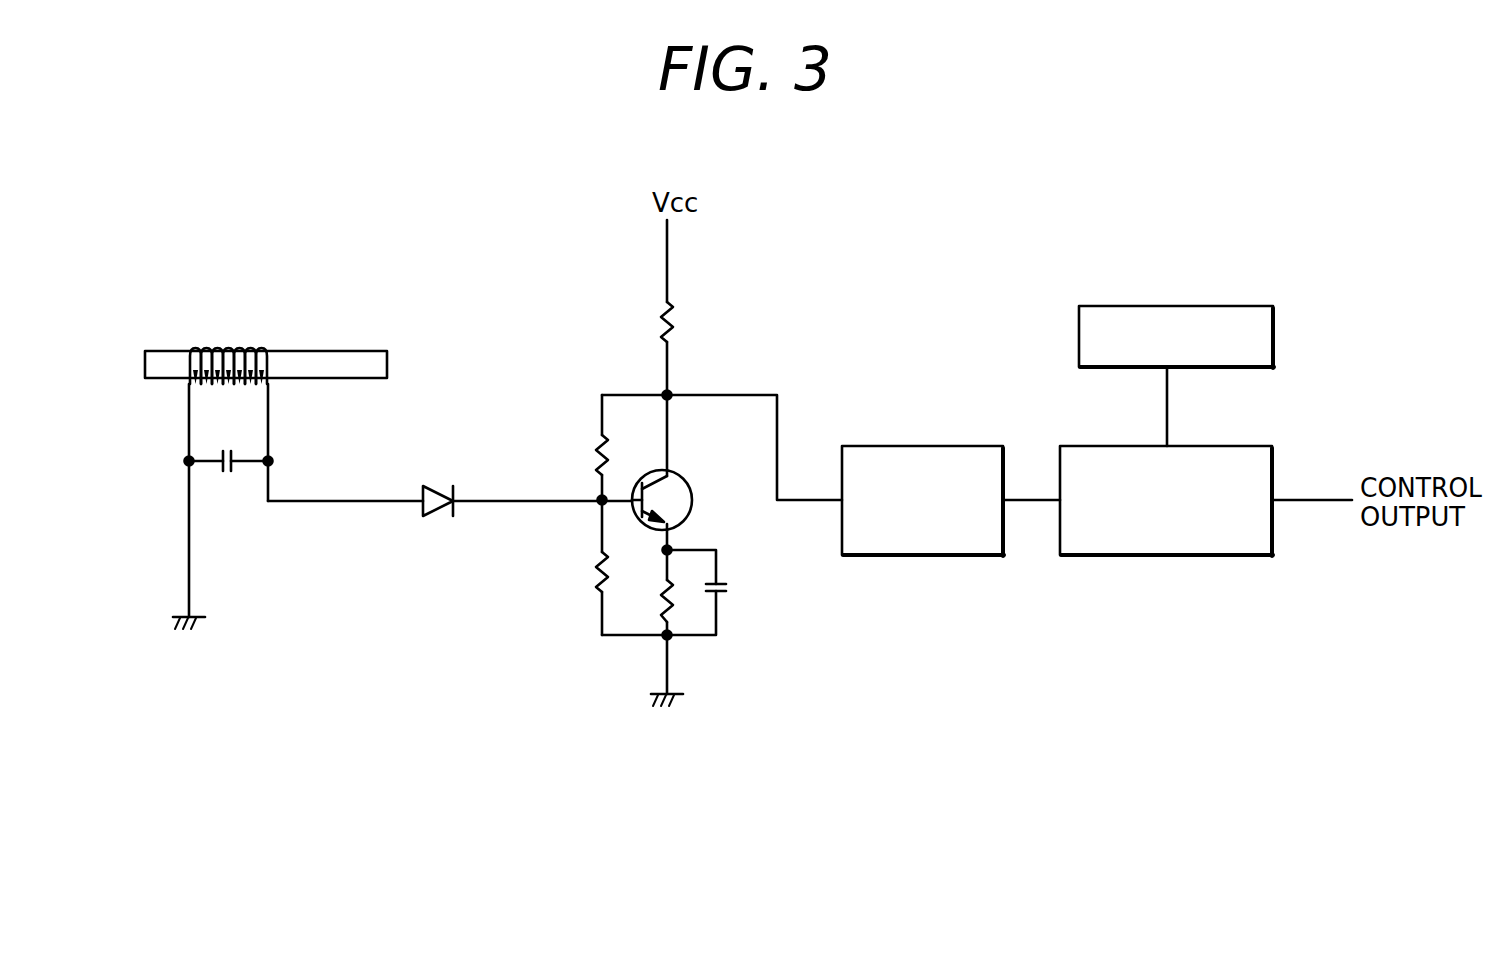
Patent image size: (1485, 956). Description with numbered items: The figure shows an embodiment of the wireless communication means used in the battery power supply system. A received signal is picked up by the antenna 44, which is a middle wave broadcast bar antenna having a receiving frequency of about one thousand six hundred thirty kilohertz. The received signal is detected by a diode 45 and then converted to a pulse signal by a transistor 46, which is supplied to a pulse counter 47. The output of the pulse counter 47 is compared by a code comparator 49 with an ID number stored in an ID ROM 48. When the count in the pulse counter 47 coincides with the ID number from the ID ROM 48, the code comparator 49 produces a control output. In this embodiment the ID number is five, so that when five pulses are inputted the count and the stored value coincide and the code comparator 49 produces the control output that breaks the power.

The antenna 44 is at (245, 347).
The diode 45 is at (444, 517).
The transistor 46 is at (693, 498).
The pulse counter 47 is at (980, 556).
The ID ROM 48 is at (1237, 305).
The code comparator 49 is at (1233, 556).